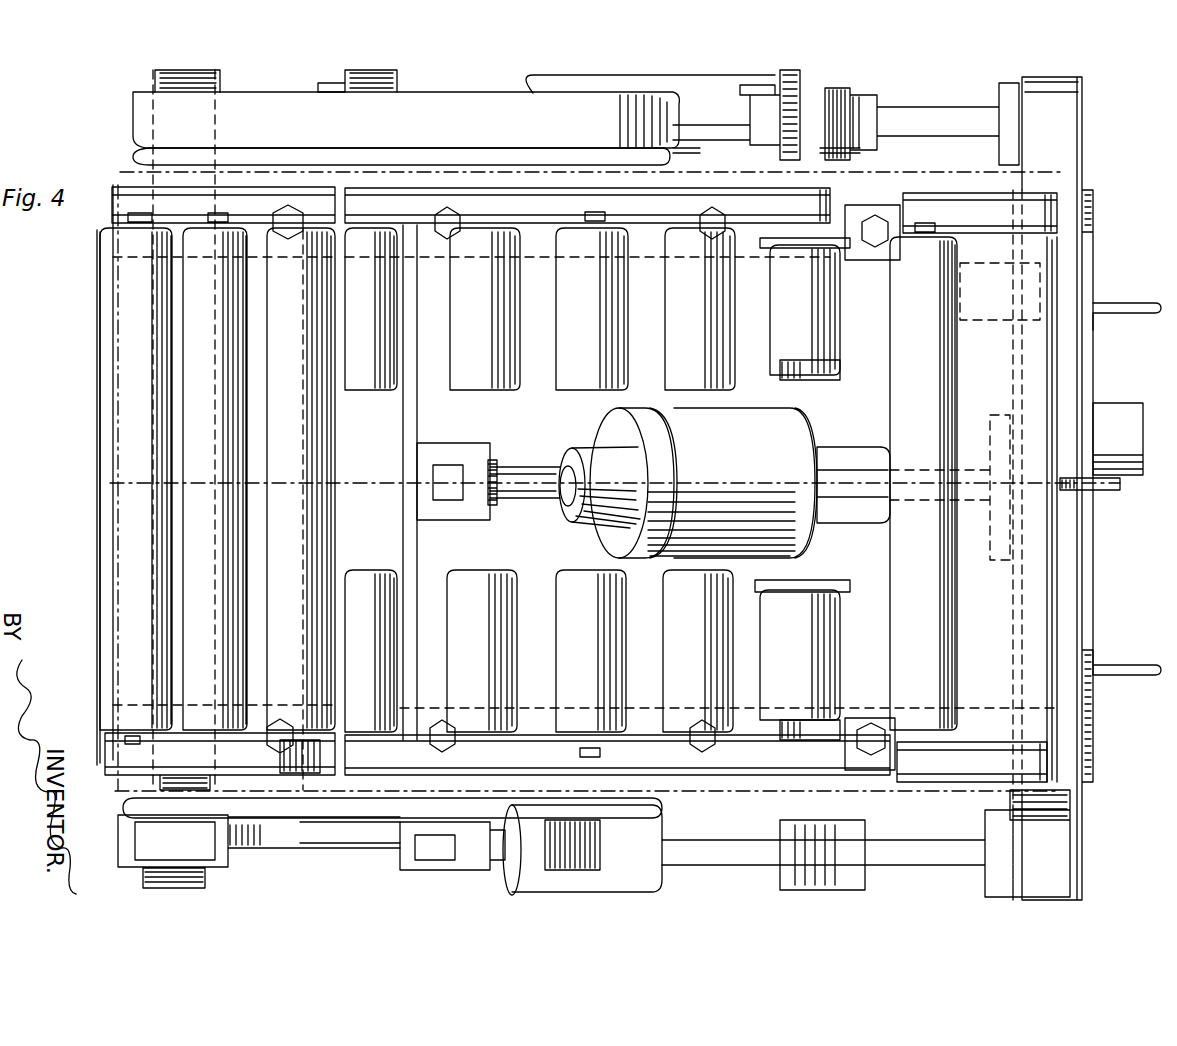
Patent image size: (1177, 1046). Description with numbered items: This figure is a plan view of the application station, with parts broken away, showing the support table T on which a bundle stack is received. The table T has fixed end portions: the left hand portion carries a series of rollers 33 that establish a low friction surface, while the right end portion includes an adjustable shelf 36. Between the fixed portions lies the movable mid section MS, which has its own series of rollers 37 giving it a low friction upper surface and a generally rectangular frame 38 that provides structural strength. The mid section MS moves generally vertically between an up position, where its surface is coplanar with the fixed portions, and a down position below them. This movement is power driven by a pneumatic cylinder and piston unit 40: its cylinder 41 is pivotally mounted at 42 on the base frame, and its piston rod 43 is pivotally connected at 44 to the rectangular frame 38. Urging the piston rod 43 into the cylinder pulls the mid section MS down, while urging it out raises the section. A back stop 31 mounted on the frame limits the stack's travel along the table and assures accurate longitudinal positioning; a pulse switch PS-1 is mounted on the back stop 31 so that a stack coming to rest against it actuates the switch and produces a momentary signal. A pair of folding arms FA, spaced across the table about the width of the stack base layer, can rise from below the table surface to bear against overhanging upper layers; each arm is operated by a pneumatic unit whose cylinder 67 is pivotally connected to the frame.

The folding arms FA is at (130, 113).
The support table T is at (110, 210).
The movable mid section MS is at (865, 172).
The back stop 31 is at (1095, 268).
The pulse switch PS-1 is at (1110, 402).
The rollers 33 is at (97, 540).
The adjustable shelf 36 is at (1030, 702).
The rollers 37 is at (420, 406).
The rectangular frame 38 is at (516, 195).
The pneumatic cylinder and piston unit 40 is at (590, 420).
The cylinder 41 is at (594, 535).
The pivotal mounting 42 is at (855, 440).
The piston rod 43 is at (534, 465).
The pivotal connection 44 is at (406, 520).
The cylinder 67 is at (520, 86).